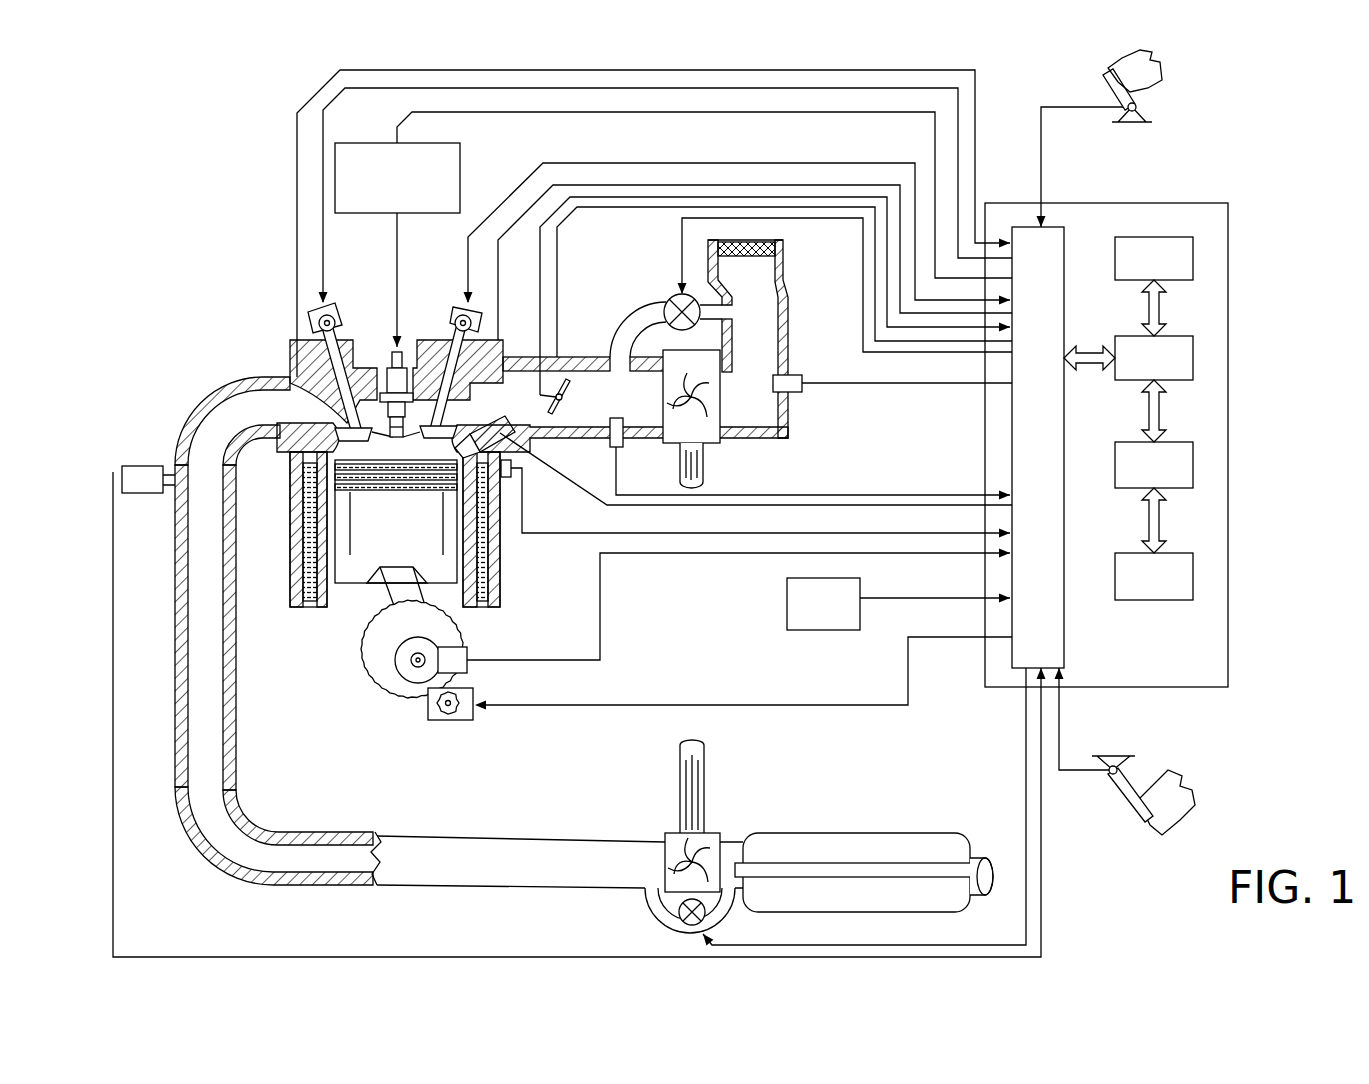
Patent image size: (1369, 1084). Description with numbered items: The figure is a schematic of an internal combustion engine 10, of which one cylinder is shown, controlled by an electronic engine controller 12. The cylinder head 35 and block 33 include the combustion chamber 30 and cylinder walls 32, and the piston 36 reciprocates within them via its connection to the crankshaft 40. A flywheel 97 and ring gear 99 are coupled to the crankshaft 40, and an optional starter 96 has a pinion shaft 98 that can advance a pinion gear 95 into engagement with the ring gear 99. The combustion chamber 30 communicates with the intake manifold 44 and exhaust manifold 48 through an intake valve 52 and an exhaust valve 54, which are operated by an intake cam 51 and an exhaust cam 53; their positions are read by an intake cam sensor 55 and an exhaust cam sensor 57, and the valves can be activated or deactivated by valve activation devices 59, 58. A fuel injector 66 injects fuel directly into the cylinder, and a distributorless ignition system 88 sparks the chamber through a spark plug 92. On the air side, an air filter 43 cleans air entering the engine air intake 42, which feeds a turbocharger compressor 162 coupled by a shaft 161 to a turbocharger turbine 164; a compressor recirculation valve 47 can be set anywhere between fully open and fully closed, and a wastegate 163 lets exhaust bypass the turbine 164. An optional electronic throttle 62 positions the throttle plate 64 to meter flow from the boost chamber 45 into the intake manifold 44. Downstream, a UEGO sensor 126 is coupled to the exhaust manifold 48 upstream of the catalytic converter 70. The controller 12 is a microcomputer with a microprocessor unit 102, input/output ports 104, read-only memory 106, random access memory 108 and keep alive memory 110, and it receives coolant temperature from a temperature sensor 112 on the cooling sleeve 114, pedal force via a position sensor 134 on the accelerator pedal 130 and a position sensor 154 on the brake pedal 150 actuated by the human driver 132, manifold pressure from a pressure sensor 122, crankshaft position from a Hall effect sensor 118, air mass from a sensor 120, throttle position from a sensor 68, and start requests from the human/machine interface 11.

The internal combustion engine 10 is at (216, 288).
The human/machine interface 11 is at (823, 604).
The electronic engine controller 12 is at (1222, 203).
The combustion chamber 30 is at (395, 445).
The cylinder walls 32 is at (336, 588).
The block 33 is at (285, 490).
The cylinder head 35 is at (284, 336).
The piston 36 is at (378, 553).
The crankshaft 40 is at (400, 690).
The engine air intake 42 is at (617, 257).
The air filter 43 is at (788, 252).
The intake manifold 44 is at (510, 409).
The boost chamber 45 is at (618, 409).
The compressor recirculation valve 47 is at (673, 293).
The exhaust manifold 48 is at (245, 419).
The intake cam 51 is at (465, 298).
The intake valve 52 is at (447, 403).
The exhaust cam 53 is at (335, 300).
The exhaust valve 54 is at (292, 388).
The intake cam sensor 55 is at (484, 328).
The exhaust cam sensor 57 is at (306, 326).
The valve activation device 58 is at (336, 320).
The valve activation device 59 is at (458, 334).
The electronic throttle 62 is at (566, 404).
The throttle plate 64 is at (563, 410).
The fuel injector 66 is at (510, 462).
The throttle position sensor 68 is at (528, 365).
The catalytic converter 70 is at (783, 833).
The distributorless ignition system 88 is at (350, 142).
The spark plug 92 is at (401, 340).
The pinion gear 95 is at (460, 719).
The starter 96 is at (473, 719).
The flywheel 97 is at (394, 655).
The pinion shaft 98 is at (443, 714).
The ring gear 99 is at (413, 702).
The microprocessor unit 102 is at (1200, 358).
The input/output ports 104 is at (1073, 230).
The read-only memory 106 is at (1200, 258).
The random access memory 108 is at (1200, 463).
The keep alive memory 110 is at (1200, 575).
The temperature sensor 112 is at (530, 496).
The cooling sleeve 114 is at (495, 556).
The Hall effect sensor 118 is at (466, 650).
The air mass sensor 120 is at (796, 376).
The pressure sensor 122 is at (612, 446).
The Universal Exhaust Gas Oxygen sensor 126 is at (122, 470).
The accelerator pedal 130 is at (1112, 83).
The human driver 132 is at (1165, 68).
The position sensor 134 is at (1140, 110).
The brake pedal 150 is at (1142, 812).
The position sensor 154 is at (1100, 768).
The shaft 161 is at (679, 463).
The turbocharger compressor 162 is at (705, 423).
The wastegate 163 is at (684, 922).
The turbocharger turbine 164 is at (666, 832).